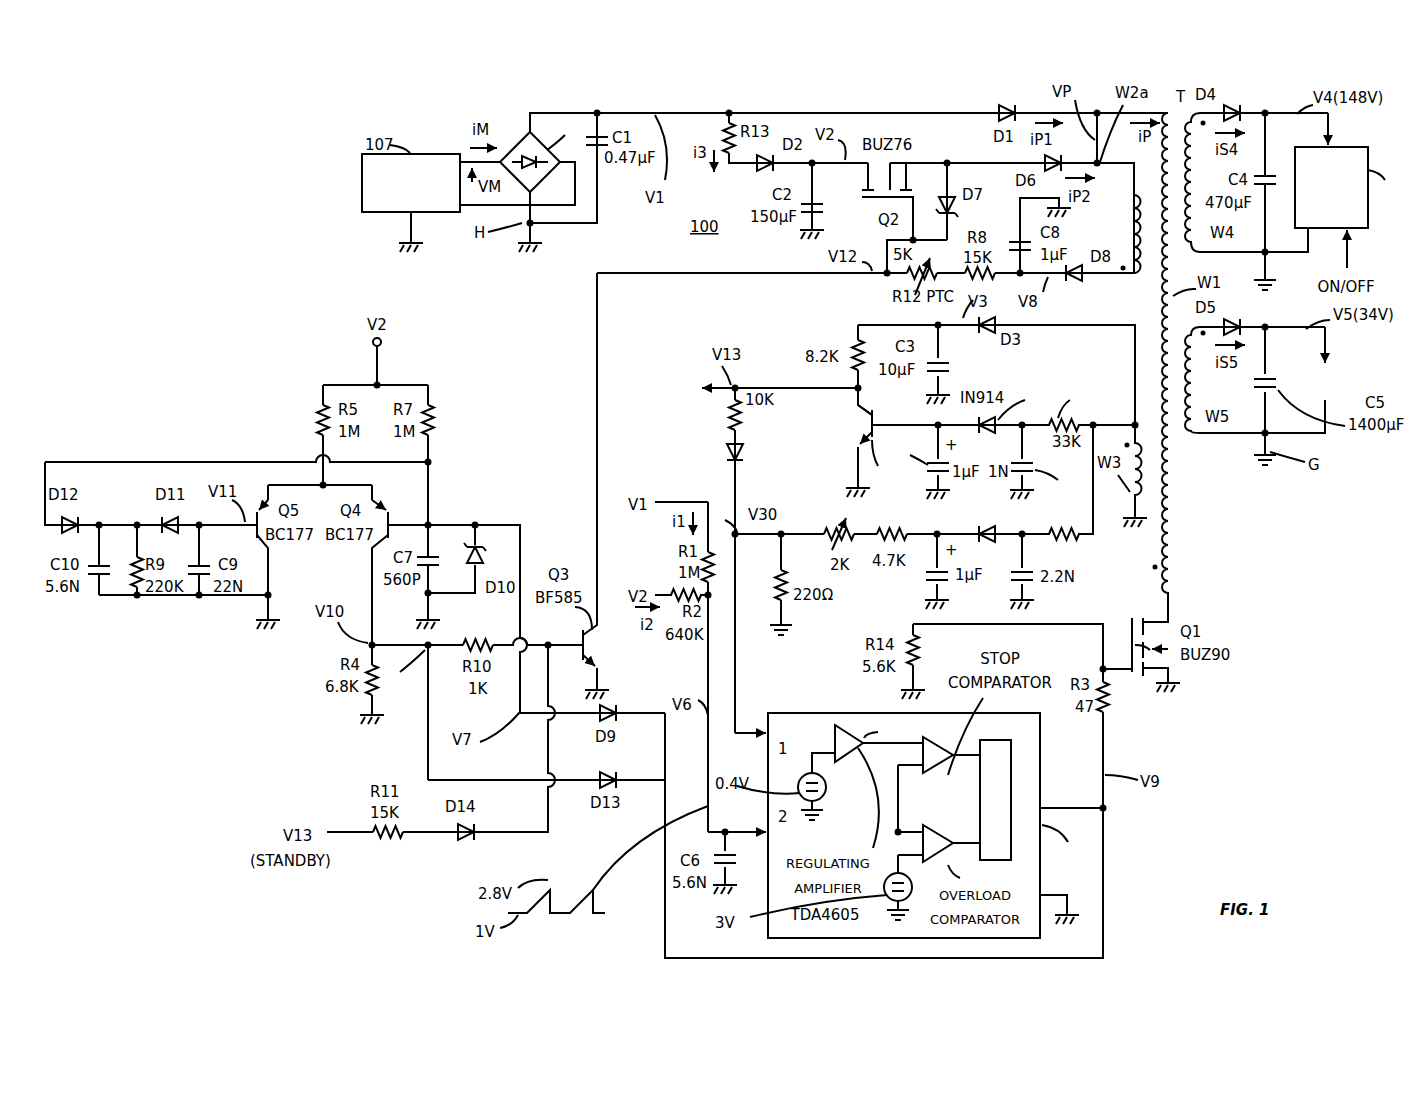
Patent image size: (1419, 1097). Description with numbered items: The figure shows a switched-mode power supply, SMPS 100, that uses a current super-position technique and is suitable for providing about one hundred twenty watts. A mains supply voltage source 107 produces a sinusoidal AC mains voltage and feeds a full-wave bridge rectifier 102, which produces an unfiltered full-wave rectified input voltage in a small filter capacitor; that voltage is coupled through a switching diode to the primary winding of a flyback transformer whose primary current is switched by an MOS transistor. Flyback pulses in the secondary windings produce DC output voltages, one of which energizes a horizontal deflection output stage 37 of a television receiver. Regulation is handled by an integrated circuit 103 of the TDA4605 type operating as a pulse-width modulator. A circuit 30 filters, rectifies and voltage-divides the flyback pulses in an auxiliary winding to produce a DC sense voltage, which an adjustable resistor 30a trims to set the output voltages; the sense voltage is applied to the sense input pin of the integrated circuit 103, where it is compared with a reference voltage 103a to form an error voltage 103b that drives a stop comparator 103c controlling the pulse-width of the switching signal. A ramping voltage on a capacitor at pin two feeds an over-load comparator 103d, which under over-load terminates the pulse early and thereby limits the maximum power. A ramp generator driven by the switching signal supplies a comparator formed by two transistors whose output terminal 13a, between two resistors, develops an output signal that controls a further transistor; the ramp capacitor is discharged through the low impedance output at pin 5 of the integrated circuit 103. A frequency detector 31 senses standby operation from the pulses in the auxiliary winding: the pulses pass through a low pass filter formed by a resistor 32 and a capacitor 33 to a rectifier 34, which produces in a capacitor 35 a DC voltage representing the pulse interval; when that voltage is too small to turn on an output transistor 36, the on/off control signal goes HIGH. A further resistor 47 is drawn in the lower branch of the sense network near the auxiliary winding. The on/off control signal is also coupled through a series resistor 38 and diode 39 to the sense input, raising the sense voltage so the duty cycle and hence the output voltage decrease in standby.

The mains supply voltage source 107 is at (410, 153).
The full-wave bridge rectifier 102 is at (547, 150).
The SMPS 100 is at (704, 227).
The horizontal deflection output stage 37 is at (1368, 170).
The detector 31 is at (977, 446).
The circuit 30 is at (937, 556).
The resistor 30a is at (834, 528).
The resistor 32 is at (1058, 418).
The capacitor 33 is at (1035, 470).
The rectifier 34 is at (998, 420).
The capacitor 35 is at (928, 465).
The output transistor 36 is at (872, 440).
The resistor 38 is at (728, 413).
The diode 39 is at (726, 448).
The resistor 47 is at (1064, 522).
The output terminal 13a is at (425, 650).
The integrated circuit 103 is at (923, 825).
The reference voltage 103a is at (835, 796).
The error voltage 103b is at (864, 738).
The stop comparator 103c is at (936, 773).
The over-load comparator 103d is at (936, 826).
The pin 5 is at (1004, 800).